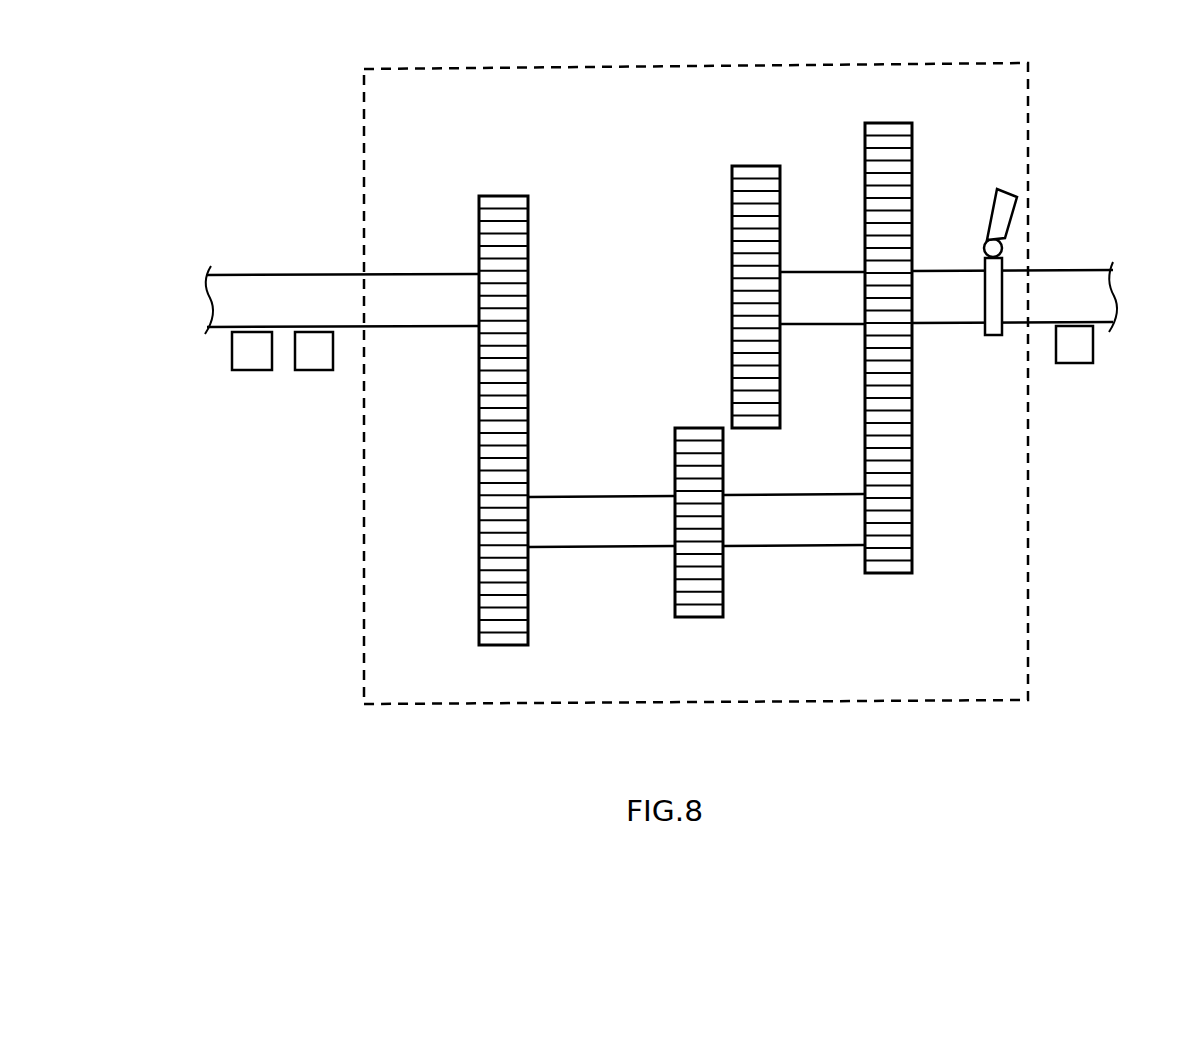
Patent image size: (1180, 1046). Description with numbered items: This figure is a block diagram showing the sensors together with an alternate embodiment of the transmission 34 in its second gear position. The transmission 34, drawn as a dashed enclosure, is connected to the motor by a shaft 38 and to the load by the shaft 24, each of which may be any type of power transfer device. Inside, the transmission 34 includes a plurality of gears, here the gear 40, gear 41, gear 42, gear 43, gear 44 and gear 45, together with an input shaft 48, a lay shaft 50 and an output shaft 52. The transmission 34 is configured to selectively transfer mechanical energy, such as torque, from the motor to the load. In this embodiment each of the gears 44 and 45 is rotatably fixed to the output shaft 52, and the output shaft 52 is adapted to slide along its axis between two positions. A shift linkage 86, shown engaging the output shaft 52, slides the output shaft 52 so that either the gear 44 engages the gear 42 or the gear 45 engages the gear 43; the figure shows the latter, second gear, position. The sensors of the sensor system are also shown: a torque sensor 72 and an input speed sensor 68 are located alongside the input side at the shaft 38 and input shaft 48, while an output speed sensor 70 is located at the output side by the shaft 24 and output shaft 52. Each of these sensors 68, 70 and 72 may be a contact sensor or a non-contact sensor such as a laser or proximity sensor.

The transmission 34 is at (985, 64).
The shaft 38 is at (319, 278).
The input shaft 48 is at (228, 274).
The shaft 24 is at (980, 255).
The output shaft 52 is at (980, 255).
The lay shaft 50 is at (805, 492).
The gear 40 is at (538, 420).
The gear 41 is at (531, 429).
The gear 42 is at (728, 589).
The gear 43 is at (916, 497).
The gear 44 is at (730, 210).
The gear 45 is at (924, 344).
The shift linkage 86 is at (990, 210).
The torque sensor 72 is at (262, 361).
The input speed sensor 68 is at (324, 361).
The output speed sensor 70 is at (1085, 355).